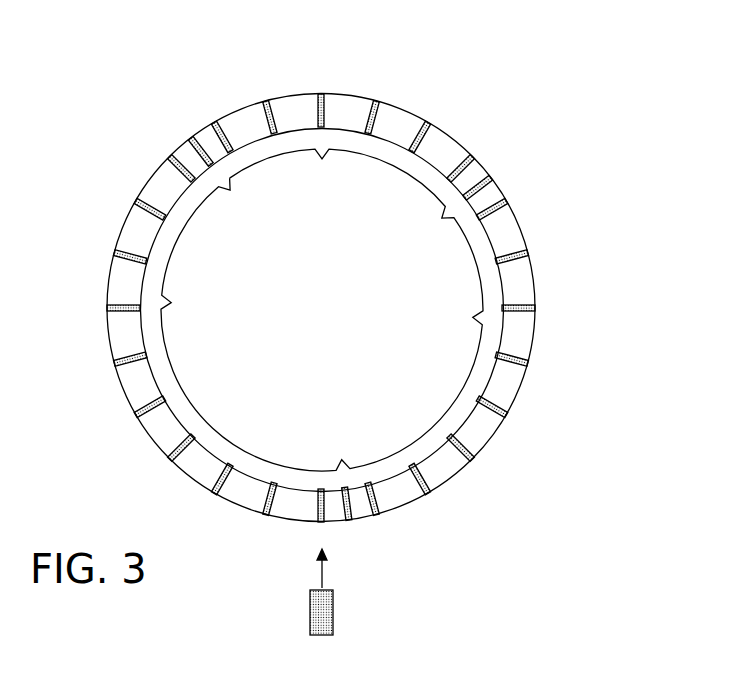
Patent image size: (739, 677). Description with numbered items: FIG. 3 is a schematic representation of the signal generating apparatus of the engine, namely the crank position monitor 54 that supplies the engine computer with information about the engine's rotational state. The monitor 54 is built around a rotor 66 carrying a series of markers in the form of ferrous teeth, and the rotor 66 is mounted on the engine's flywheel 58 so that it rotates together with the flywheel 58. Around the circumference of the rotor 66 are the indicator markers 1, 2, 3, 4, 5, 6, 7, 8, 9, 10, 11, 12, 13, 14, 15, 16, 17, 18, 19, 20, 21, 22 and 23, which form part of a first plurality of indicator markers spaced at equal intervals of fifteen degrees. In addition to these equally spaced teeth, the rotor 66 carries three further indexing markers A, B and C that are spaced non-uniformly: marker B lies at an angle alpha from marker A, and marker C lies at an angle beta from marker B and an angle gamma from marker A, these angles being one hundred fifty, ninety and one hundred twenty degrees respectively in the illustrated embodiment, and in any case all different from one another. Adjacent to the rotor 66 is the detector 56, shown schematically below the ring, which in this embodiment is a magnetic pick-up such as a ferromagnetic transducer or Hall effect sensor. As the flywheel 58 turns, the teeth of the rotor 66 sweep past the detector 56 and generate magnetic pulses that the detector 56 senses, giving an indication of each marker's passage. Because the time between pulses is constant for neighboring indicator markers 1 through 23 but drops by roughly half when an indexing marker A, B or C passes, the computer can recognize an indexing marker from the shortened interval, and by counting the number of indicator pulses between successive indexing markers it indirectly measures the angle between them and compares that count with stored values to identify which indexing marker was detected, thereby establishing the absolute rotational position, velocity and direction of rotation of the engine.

The indicator marker 1 is at (378, 518).
The indicator marker 2 is at (429, 496).
The indicator marker 3 is at (473, 463).
The indicator marker 4 is at (506, 419).
The indicator marker 5 is at (529, 367).
The indicator marker 6 is at (536, 308).
The indicator marker 7 is at (529, 248).
The indicator marker 8 is at (506, 197).
The indicator marker 9 is at (473, 153).
The indicator marker 10 is at (432, 119).
The indicator marker 11 is at (381, 97).
The indicator marker 12 is at (321, 90).
The indicator marker 13 is at (261, 97).
The indicator marker 14 is at (209, 119).
The indicator marker 15 is at (166, 153).
The indicator marker 16 is at (132, 197).
The indicator marker 17 is at (110, 248).
The indicator marker 18 is at (102, 308).
The indicator marker 19 is at (110, 367).
The indicator marker 20 is at (132, 419).
The indicator marker 21 is at (166, 463).
The indicator marker 22 is at (210, 496).
The indicator marker 23 is at (261, 518).
The crank position monitor 54 is at (604, 359).
The detector 56 is at (333, 619).
The flywheel 58 is at (328, 304).
The rotor 66 is at (446, 146).